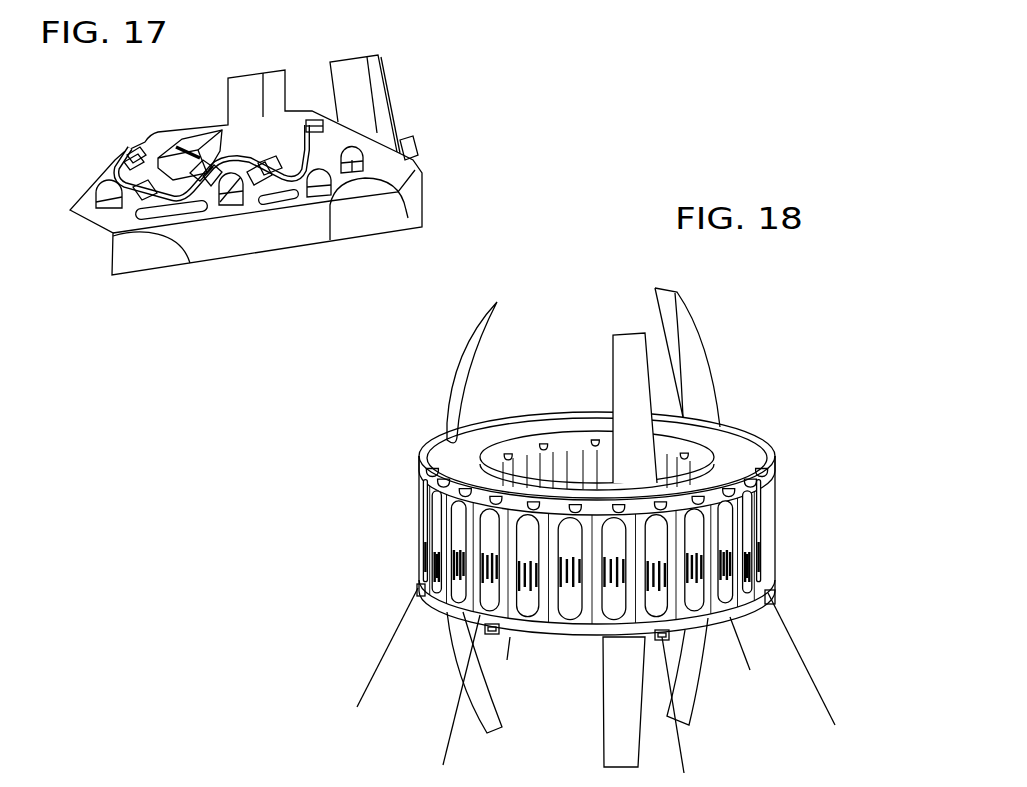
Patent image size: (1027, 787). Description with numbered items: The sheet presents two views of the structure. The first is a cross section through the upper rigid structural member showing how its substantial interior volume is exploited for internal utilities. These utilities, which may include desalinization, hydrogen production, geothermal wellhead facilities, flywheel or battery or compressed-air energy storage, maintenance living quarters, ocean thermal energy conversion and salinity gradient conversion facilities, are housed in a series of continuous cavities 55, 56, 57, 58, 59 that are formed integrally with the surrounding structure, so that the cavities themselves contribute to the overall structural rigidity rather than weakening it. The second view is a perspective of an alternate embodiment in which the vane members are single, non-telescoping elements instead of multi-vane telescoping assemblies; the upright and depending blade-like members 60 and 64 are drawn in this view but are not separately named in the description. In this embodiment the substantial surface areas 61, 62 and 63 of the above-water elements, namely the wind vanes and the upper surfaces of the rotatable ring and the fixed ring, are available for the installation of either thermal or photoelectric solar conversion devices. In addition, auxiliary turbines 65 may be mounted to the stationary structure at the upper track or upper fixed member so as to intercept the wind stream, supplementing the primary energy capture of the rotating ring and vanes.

In FIG. 17, the continuous cavity 55 is at (102, 220).
In FIG. 17, the continuous cavity 56 is at (170, 218).
In FIG. 17, the continuous cavity 57 is at (222, 206).
In FIG. 17, the continuous cavity 58 is at (318, 197).
In FIG. 17, the continuous cavity 59 is at (347, 166).
In FIG. 18, the curved blade 60 is at (697, 330).
In FIG. 18, the surface area 61 is at (632, 400).
In FIG. 18, the surface area 62 is at (728, 452).
In FIG. 18, the surface area 63 is at (430, 453).
In FIG. 18, the lower blade 64 is at (627, 692).
In FIG. 18, the auxiliary turbine 65 is at (242, 786).